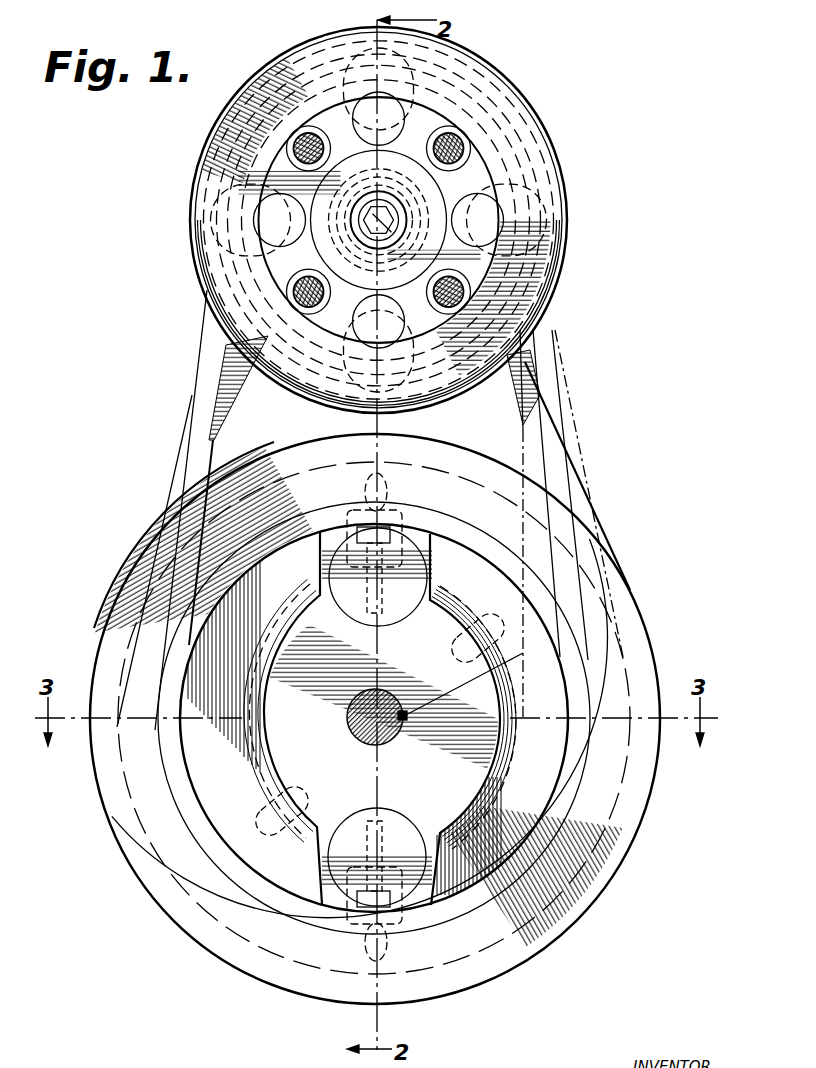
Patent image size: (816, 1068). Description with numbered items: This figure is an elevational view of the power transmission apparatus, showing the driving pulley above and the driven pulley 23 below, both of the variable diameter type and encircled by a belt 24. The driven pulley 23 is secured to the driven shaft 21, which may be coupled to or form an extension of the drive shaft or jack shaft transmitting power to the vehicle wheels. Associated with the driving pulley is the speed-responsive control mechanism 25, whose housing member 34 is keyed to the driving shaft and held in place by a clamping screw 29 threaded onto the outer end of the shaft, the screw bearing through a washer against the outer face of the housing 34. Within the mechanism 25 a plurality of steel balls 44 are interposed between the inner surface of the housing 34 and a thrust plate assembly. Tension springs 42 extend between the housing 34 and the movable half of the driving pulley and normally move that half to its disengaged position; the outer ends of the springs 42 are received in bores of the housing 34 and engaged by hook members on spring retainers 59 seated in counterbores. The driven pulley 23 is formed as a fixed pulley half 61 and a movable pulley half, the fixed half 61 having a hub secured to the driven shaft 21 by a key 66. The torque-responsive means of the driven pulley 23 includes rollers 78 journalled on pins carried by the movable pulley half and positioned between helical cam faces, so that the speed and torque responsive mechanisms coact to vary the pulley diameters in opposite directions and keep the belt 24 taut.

The driven shaft 21 is at (356, 739).
The driven pulley 23 is at (654, 588).
The belt 24 is at (563, 453).
The speed-responsive control mechanism 25 is at (170, 268).
The clamping screw 29 is at (398, 212).
The housing member 34 is at (208, 170).
The tension springs 42 is at (546, 136).
The steel balls 44 is at (533, 222).
The spring retainer 59 is at (302, 291).
The fixed pulley half 61 is at (190, 877).
The key 66 is at (404, 727).
The rollers 78 is at (437, 578).